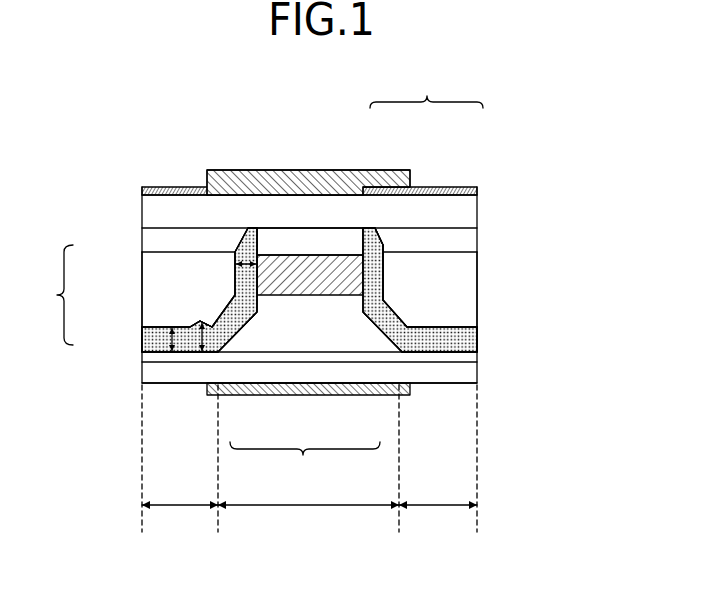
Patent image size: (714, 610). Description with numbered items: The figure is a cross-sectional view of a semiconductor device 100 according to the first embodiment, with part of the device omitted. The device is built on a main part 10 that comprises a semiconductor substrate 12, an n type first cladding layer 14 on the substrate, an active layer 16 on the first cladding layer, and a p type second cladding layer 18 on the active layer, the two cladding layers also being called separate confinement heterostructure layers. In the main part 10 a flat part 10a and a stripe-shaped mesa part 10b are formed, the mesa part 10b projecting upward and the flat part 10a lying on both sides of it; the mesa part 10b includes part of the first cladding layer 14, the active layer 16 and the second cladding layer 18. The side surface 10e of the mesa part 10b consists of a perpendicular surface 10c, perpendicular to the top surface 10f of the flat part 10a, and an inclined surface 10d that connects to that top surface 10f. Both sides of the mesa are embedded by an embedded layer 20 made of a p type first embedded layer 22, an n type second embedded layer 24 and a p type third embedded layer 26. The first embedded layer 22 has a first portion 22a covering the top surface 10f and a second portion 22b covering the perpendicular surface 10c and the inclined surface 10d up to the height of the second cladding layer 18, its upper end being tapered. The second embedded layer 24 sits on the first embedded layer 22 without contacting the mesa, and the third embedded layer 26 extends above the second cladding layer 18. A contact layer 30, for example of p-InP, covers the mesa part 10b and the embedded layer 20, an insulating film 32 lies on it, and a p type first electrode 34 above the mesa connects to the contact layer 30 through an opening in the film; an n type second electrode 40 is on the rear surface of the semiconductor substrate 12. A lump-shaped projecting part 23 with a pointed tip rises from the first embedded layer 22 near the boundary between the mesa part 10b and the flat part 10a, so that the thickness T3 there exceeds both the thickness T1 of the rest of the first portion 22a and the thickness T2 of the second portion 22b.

The semiconductor device 100 is at (80, 92).
The main part 10 is at (305, 466).
The flat part 10a is at (177, 510).
The mesa part 10b is at (309, 510).
The perpendicular surface 10c is at (380, 242).
The inclined surface 10d is at (385, 300).
The side surface 10e is at (426, 82).
The top surface 10f is at (450, 348).
The semiconductor substrate 12 is at (248, 372).
The first cladding layer 14 is at (285, 340).
The active layer 16 is at (302, 283).
The second cladding layer 18 is at (345, 248).
The embedded layer 20 is at (49, 295).
The first embedded layer 22 is at (150, 338).
The first portion 22a is at (440, 330).
The second portion 22b is at (244, 249).
The projecting part 23 is at (199, 321).
The second embedded layer 24 is at (150, 292).
The third embedded layer 26 is at (150, 241).
The contact layer 30 is at (150, 209).
The insulating film 32 is at (160, 187).
The first electrode 34 is at (330, 170).
The second electrode 40 is at (407, 396).
The thickness of first portion T1 is at (197, 331).
The thickness of second portion T2 is at (247, 262).
The thickness at projecting part T3 is at (172, 352).